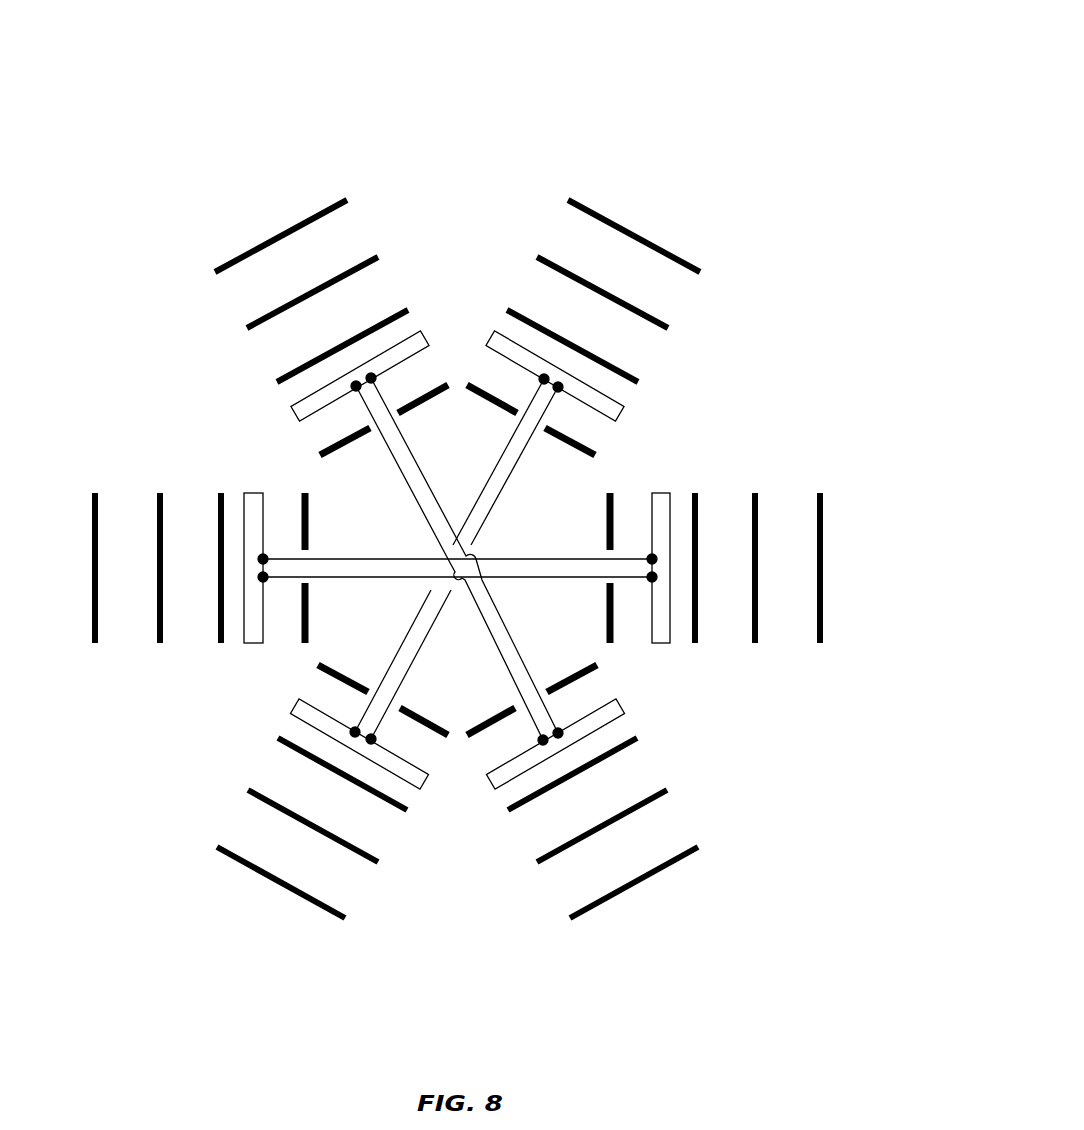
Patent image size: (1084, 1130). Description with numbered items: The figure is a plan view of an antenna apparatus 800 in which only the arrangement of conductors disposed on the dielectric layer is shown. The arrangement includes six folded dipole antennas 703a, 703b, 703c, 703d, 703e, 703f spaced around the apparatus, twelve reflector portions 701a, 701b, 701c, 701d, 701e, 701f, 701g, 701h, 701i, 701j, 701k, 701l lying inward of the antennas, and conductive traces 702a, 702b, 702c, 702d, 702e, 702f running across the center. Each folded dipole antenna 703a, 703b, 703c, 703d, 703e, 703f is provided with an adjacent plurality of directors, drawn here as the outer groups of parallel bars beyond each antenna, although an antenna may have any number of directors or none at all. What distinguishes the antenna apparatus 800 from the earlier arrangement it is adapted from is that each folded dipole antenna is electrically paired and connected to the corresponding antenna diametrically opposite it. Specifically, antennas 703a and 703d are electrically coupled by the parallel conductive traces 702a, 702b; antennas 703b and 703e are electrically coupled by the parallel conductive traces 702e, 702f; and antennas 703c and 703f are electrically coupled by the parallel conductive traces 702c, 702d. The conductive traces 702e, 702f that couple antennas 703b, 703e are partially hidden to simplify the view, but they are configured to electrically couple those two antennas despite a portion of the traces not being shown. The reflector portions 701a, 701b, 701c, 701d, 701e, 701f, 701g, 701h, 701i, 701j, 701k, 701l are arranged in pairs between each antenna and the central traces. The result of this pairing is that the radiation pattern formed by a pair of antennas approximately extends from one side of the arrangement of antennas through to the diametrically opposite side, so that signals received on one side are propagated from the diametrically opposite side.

The antenna apparatus 800 is at (688, 96).
The reflector portion 701a is at (318, 456).
The reflector portion 701b is at (435, 386).
The reflector portion 701c is at (481, 388).
The reflector portion 701d is at (598, 458).
The reflector portion 701e is at (615, 503).
The reflector portion 701f is at (613, 634).
The reflector portion 701g is at (575, 670).
The reflector portion 701h is at (482, 721).
The reflector portion 701i is at (431, 720).
The reflector portion 701j is at (339, 670).
The reflector portion 701k is at (302, 634).
The reflector portion 701l is at (253, 494).
The conductive trace 702a is at (410, 488).
The conductive trace 702b is at (409, 447).
The conductive trace 702c is at (525, 558).
The conductive trace 702d is at (525, 578).
The conductive trace 702e is at (500, 454).
The conductive trace 702f is at (520, 459).
The folded dipole antenna 703a is at (288, 411).
The folded dipole antenna 703b is at (626, 410).
The folded dipole antenna 703c is at (662, 492).
The folded dipole antenna 703d is at (622, 709).
The folded dipole antenna 703e is at (291, 710).
The folded dipole antenna 703f is at (302, 500).